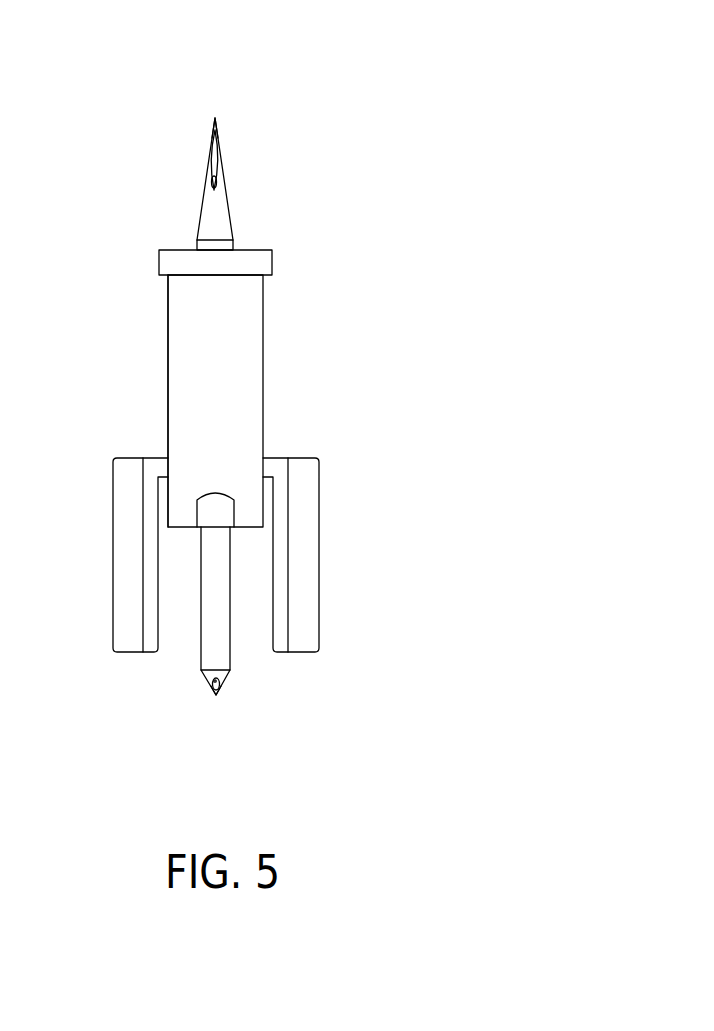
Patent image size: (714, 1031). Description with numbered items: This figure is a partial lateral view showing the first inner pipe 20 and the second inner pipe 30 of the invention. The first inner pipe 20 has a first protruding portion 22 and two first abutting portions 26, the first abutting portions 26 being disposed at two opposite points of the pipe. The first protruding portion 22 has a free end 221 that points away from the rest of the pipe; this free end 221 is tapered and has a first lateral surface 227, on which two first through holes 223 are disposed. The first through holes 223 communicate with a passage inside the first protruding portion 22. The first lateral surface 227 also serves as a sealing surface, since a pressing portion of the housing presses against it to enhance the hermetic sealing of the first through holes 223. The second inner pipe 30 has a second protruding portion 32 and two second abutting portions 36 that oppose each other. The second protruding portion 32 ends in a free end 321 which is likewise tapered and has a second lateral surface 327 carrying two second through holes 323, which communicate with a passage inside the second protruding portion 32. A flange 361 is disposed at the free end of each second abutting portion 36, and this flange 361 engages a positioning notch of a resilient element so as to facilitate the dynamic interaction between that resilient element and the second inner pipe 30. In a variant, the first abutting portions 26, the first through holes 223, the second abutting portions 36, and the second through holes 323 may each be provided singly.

The first inner pipe 20 is at (108, 505).
The first protruding portion 22 is at (229, 245).
The free end 221 is at (216, 117).
The first through holes 223 is at (218, 178).
The first lateral surface 227 is at (201, 198).
The first abutting portions 26 is at (307, 562).
The second inner pipe 30 is at (163, 346).
The second protruding portion 32 is at (222, 603).
The free end 321 is at (216, 696).
The second through holes 323 is at (221, 692).
The second lateral surface 327 is at (207, 679).
The second abutting portions 36 is at (250, 387).
The flange 361 is at (260, 263).